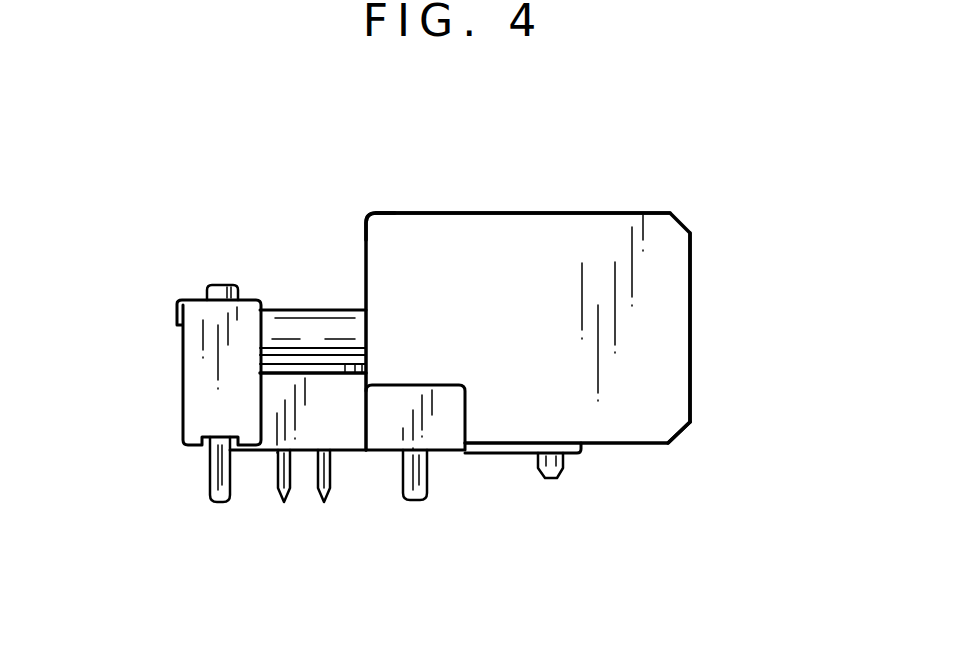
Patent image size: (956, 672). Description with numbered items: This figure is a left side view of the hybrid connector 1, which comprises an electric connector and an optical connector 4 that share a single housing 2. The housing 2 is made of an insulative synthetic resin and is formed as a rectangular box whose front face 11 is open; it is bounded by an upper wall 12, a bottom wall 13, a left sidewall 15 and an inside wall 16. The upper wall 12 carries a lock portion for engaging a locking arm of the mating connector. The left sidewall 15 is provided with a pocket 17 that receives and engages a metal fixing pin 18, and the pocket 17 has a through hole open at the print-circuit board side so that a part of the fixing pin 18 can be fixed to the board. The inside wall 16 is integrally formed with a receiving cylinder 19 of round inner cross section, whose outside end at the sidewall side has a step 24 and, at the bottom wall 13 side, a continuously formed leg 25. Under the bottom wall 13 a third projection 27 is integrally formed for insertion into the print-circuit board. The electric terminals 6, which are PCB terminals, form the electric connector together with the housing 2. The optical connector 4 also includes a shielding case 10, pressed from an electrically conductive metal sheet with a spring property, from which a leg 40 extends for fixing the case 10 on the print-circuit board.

The hybrid connector 1 is at (563, 160).
The housing 2 is at (610, 213).
The optical connector 4 is at (204, 263).
The electric terminals 6 is at (319, 493).
The shielding case 10 is at (203, 363).
The front face 11 is at (690, 326).
The upper wall 12 is at (462, 213).
The bottom wall 13 is at (625, 447).
The left sidewall 15 is at (660, 388).
The inside wall 16 is at (366, 265).
The pocket 17 is at (442, 422).
The fixing pin 18 is at (420, 502).
The receiving cylinder 19 is at (308, 338).
The step 24 is at (288, 378).
The leg 25 is at (342, 423).
The third projection 27 is at (554, 480).
The leg 40 is at (217, 503).